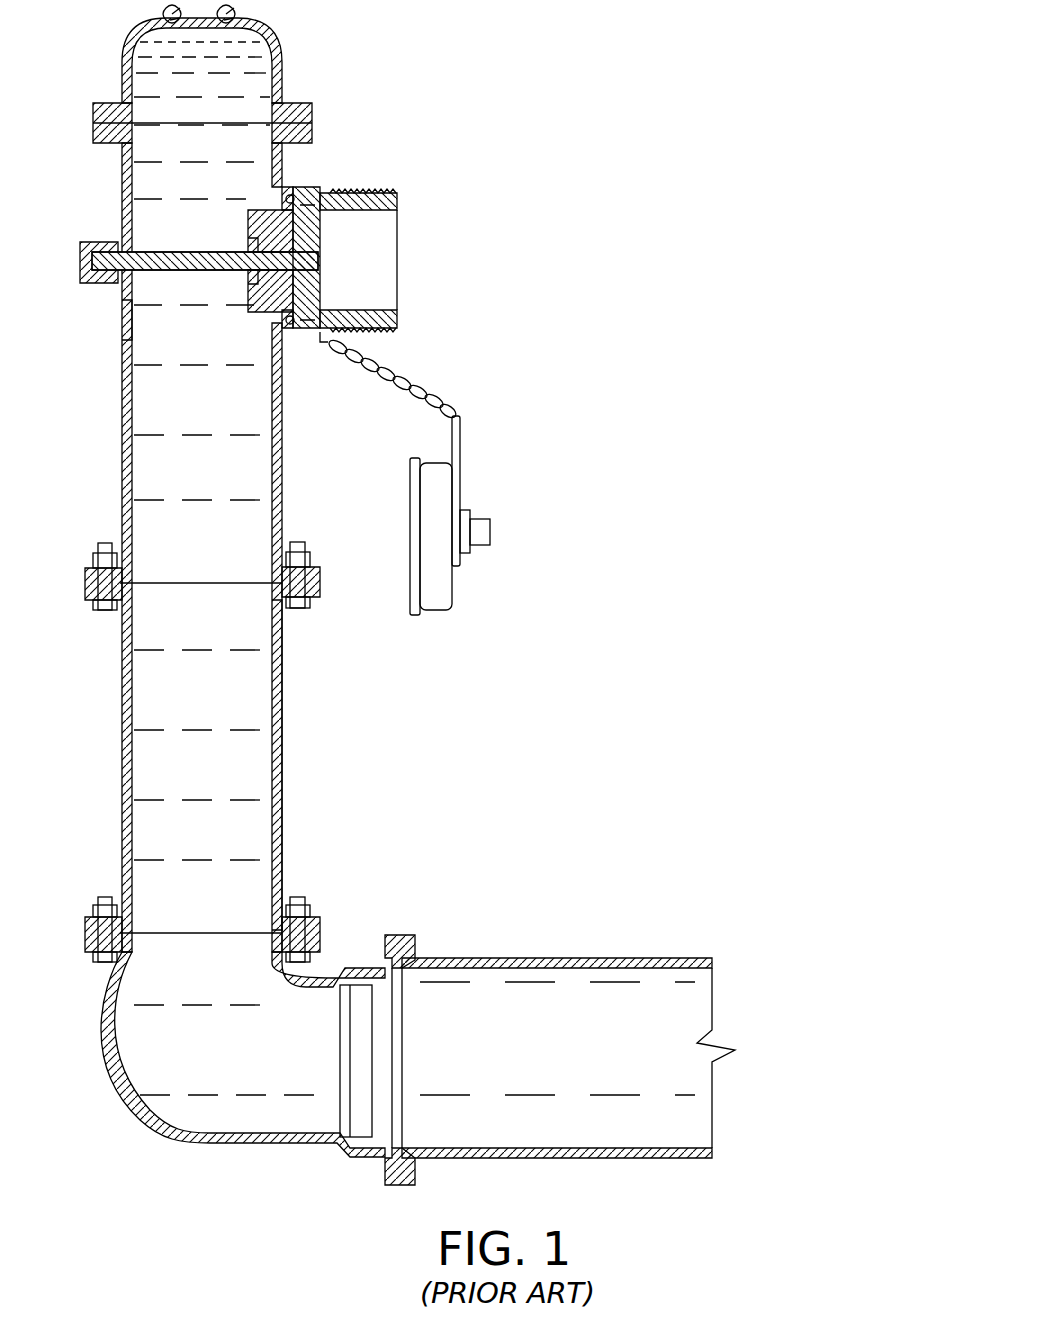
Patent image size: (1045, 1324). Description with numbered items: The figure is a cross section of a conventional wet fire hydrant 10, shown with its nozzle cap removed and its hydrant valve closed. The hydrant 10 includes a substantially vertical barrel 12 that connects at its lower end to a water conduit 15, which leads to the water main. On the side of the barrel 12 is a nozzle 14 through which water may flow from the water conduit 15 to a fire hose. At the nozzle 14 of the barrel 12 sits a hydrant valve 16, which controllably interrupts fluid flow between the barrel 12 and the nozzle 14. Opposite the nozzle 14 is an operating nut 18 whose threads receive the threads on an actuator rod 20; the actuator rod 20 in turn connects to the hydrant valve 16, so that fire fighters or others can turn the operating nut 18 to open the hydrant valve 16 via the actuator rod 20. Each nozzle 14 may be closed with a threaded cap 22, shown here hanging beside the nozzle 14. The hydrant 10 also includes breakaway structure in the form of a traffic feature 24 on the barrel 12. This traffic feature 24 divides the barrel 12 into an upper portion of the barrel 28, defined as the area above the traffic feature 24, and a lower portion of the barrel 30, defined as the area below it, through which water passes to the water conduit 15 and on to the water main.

The wet fire hydrant 10 is at (640, 179).
The barrel 12 is at (122, 355).
The nozzle 14 is at (384, 336).
The water conduit 15 is at (565, 958).
The hydrant valve 16 is at (330, 243).
The operating nut 18 is at (107, 242).
The actuator rod 20 is at (172, 250).
The threaded cap 22 is at (437, 592).
The traffic feature 24 is at (88, 580).
The upper portion of the barrel 28 is at (122, 318).
The lower portion of the barrel 30 is at (284, 757).